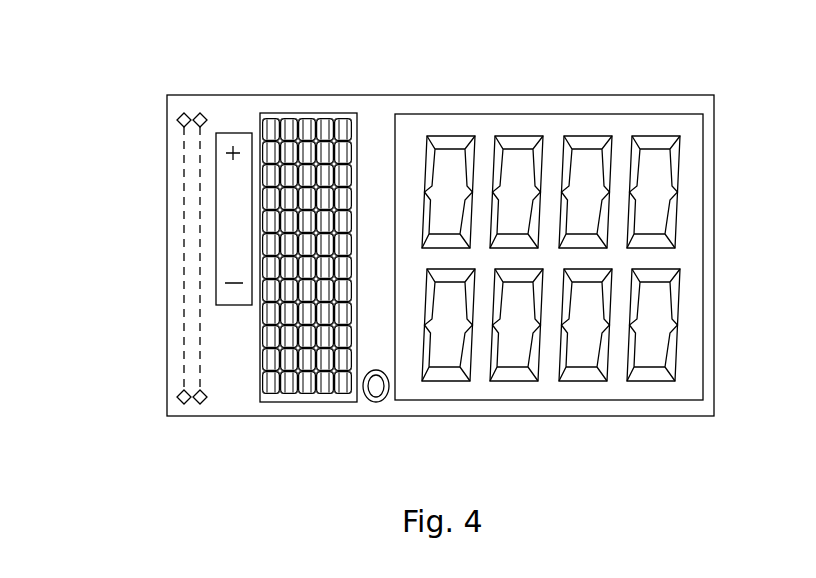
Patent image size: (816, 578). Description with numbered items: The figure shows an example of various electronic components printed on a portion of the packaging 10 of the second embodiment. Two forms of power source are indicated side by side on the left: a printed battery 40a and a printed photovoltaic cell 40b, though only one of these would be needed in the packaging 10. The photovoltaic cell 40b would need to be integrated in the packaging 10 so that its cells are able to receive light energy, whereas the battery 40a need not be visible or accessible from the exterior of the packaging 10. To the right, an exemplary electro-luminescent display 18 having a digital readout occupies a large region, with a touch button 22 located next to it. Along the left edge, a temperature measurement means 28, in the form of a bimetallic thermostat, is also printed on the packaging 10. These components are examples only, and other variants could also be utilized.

The packaging 10 is at (520, 406).
The electro-luminescent display 18 is at (652, 383).
The touch button 22 is at (376, 402).
The temperature measurement means 28 is at (185, 160).
The printed battery 40a is at (234, 132).
The printed photovoltaic cell 40b is at (343, 115).